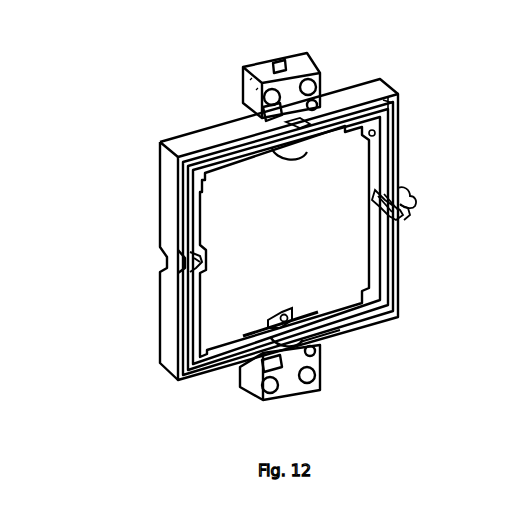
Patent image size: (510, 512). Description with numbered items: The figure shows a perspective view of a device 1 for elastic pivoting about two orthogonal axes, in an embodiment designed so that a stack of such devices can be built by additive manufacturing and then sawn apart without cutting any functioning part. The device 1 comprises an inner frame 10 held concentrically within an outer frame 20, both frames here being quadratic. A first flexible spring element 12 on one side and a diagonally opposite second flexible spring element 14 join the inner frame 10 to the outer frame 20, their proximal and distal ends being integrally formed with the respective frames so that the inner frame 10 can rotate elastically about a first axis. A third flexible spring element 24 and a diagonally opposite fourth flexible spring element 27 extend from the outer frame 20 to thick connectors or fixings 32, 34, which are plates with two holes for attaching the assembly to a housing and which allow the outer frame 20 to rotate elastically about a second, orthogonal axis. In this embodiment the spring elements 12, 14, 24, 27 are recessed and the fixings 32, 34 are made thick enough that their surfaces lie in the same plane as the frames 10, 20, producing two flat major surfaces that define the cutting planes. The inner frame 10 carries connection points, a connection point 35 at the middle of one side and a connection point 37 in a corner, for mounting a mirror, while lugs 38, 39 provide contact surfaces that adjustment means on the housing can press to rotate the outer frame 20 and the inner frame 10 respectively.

The device 1 is at (103, 243).
The inner frame 10 is at (372, 262).
The first flexible spring element 12 is at (196, 253).
The second flexible spring element 14 is at (406, 218).
The outer frame 20 is at (187, 148).
The third flexible spring element 24 is at (322, 342).
The fourth flexible spring element 27 is at (300, 130).
The connector or fixing 32 is at (292, 392).
The connector or fixing 34 is at (292, 80).
The connection point 35 is at (290, 308).
The connection point 37 is at (390, 100).
The lug 38 is at (418, 198).
The lug 39 is at (298, 158).